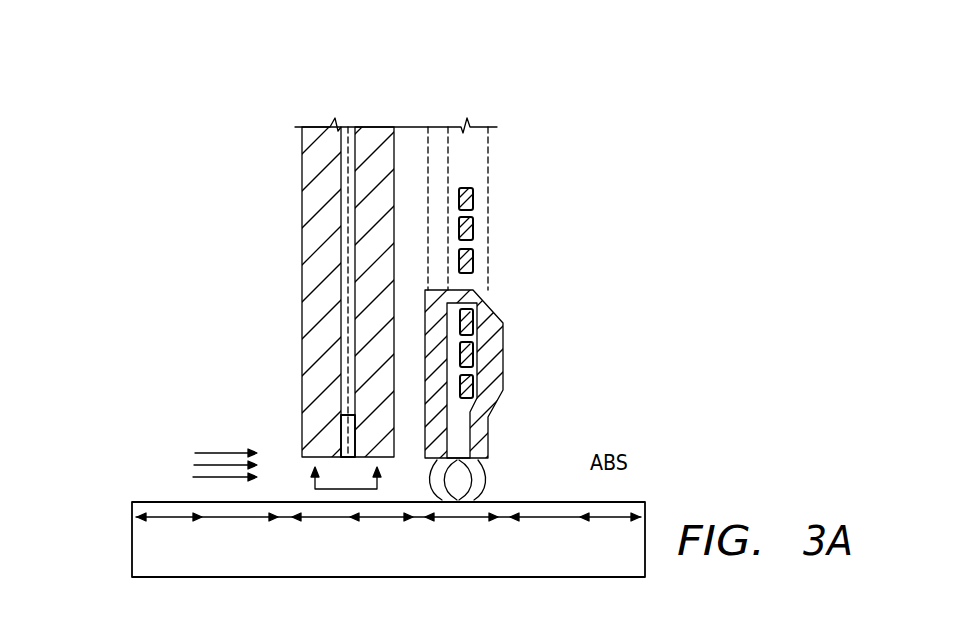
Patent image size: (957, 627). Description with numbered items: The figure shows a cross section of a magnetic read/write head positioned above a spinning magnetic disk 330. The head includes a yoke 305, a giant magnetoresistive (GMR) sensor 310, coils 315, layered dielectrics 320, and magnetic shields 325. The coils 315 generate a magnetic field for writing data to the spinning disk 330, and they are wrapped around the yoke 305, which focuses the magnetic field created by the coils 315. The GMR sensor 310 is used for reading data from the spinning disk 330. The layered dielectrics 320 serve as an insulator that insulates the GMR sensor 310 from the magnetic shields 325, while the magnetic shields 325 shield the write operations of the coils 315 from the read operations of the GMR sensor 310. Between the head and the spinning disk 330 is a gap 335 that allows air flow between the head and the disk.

The yoke 305 is at (503, 363).
The GMR sensor 310 is at (345, 422).
The coils 315 is at (488, 229).
The layered dielectrics 320 is at (429, 118).
The magnetic shields 325 is at (303, 178).
The spinning magnetic disk 330 is at (133, 538).
The gap 335 is at (220, 452).